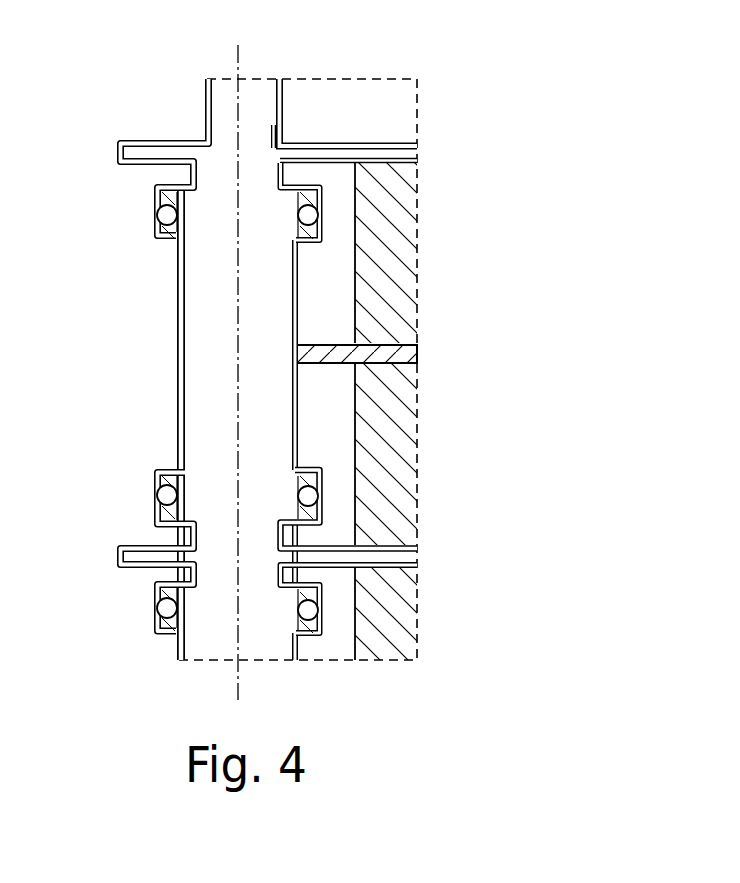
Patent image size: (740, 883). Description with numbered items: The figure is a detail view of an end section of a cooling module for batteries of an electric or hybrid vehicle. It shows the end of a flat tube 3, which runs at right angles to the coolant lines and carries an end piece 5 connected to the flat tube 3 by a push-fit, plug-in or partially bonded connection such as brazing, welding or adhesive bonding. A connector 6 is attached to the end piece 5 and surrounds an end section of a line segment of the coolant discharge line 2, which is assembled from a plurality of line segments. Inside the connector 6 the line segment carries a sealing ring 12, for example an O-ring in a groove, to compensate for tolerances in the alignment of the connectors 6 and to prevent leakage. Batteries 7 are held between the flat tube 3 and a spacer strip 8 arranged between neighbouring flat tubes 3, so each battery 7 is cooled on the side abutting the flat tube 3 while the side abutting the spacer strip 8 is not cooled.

The coolant discharge line 2 is at (177, 313).
The flat tube 3 is at (362, 142).
The end piece 5 is at (298, 142).
The connector 6 is at (153, 232).
The battery 7 is at (397, 253).
The spacer strip 8 is at (397, 355).
The sealing ring 12 is at (160, 207).